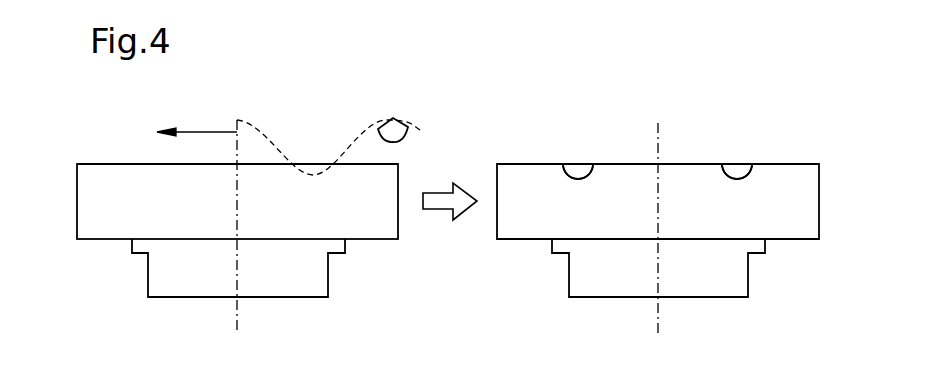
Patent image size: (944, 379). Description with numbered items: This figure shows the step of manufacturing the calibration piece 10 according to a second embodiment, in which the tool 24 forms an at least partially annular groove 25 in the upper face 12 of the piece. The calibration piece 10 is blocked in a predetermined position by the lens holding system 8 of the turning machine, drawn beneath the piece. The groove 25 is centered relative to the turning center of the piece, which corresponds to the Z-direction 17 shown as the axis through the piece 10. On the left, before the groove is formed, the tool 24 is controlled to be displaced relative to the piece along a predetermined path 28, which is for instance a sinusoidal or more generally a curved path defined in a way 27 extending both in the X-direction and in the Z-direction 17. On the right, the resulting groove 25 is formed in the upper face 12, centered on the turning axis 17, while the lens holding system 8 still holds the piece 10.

The lens holding system 8 is at (148, 275).
The calibration piece 10 is at (77, 205).
The upper face 12 is at (104, 163).
The Z-direction 17 is at (237, 317).
The tool 24 is at (393, 118).
The annular groove 25 is at (578, 168).
The way 27 is at (194, 132).
The predetermined path 28 is at (363, 128).